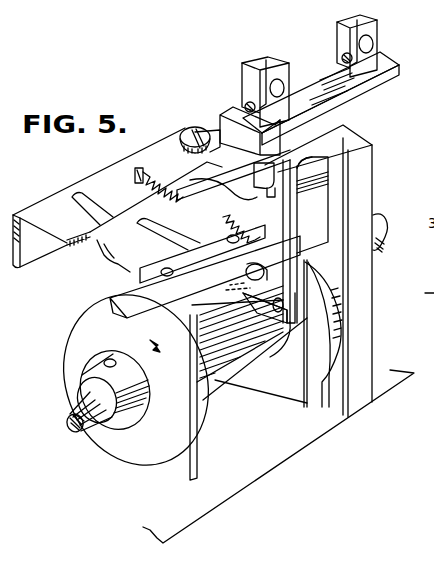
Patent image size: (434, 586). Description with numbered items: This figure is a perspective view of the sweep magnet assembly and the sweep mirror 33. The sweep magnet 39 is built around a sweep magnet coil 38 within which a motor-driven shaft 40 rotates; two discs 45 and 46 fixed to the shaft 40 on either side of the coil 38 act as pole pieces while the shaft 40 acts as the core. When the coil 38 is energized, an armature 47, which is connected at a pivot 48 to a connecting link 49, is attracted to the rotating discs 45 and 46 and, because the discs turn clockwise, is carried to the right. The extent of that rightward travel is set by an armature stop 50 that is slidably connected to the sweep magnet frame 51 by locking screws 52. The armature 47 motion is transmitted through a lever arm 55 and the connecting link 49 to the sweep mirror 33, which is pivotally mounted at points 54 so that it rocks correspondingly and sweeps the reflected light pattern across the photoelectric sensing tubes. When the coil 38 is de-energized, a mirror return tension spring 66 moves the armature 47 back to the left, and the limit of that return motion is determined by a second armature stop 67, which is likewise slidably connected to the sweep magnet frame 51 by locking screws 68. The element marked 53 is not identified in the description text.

The sweep mirror 33 is at (369, 100).
The sweep magnet coil 38 is at (223, 381).
The sweep magnet 39 is at (374, 169).
The shaft 40 is at (62, 405).
The disc 45 is at (110, 437).
The disc 46 is at (325, 368).
The armature 47 is at (118, 318).
The pivot 48 is at (282, 327).
The connecting link 49 is at (297, 167).
The armature stop 50 is at (326, 212).
The sweep magnet frame 51 is at (373, 273).
The locking screws 52 is at (270, 170).
The support bar 53 is at (364, 110).
The pivot points 54 is at (345, 55).
The lever arm 55 is at (254, 297).
The mirror return tension spring 66 is at (150, 182).
The armature stop 67 is at (90, 245).
The locking screws 68 is at (193, 130).